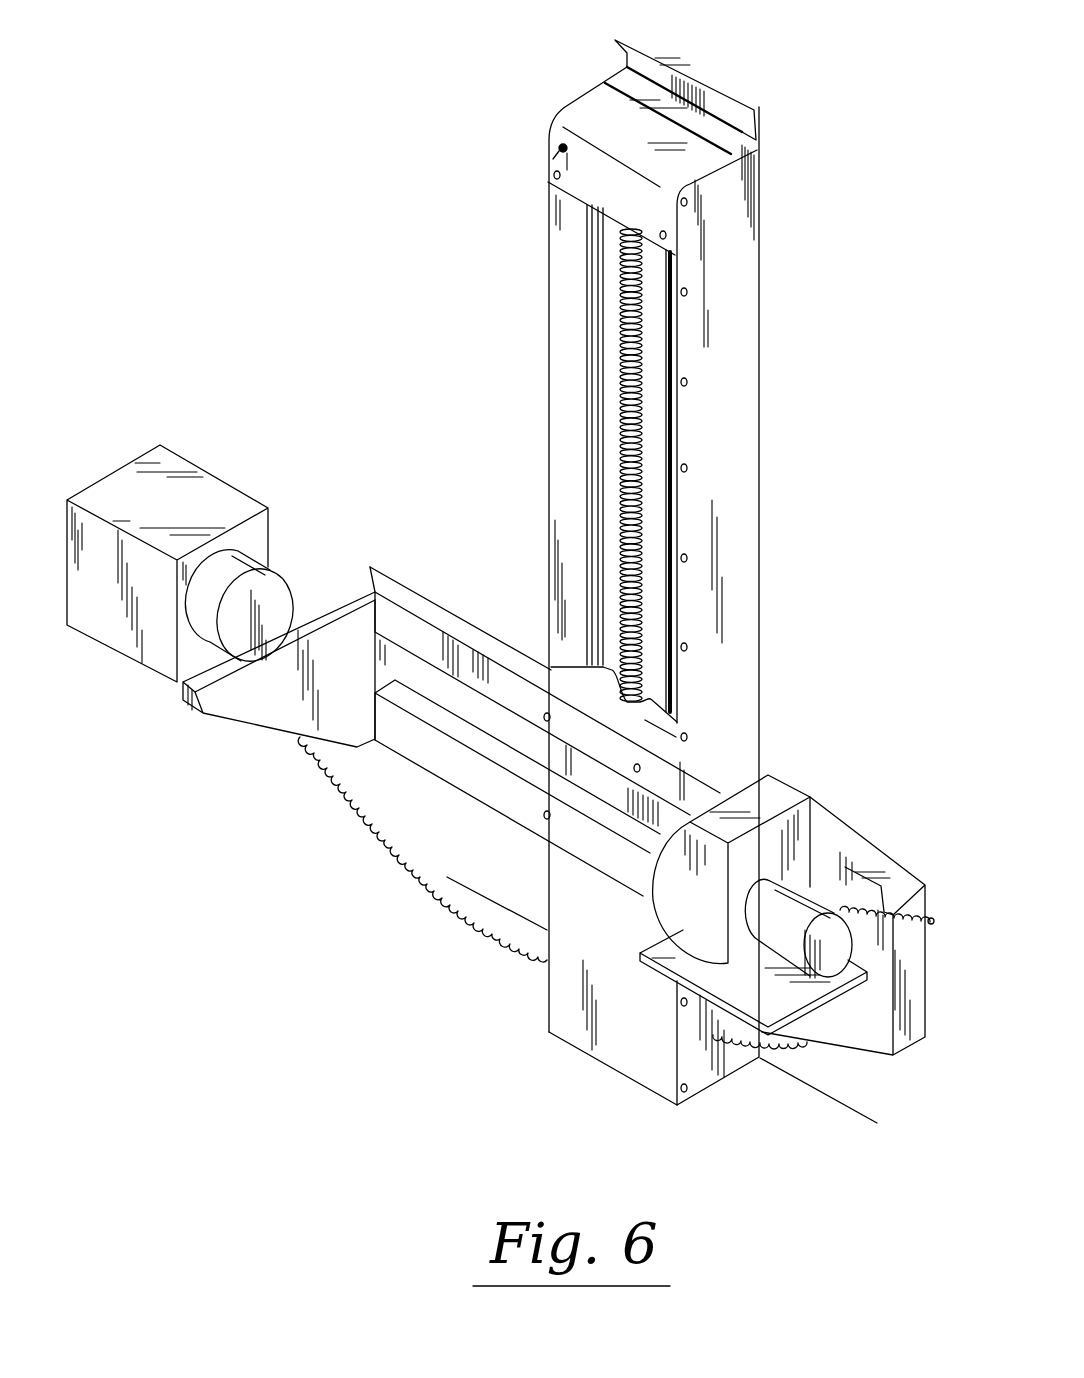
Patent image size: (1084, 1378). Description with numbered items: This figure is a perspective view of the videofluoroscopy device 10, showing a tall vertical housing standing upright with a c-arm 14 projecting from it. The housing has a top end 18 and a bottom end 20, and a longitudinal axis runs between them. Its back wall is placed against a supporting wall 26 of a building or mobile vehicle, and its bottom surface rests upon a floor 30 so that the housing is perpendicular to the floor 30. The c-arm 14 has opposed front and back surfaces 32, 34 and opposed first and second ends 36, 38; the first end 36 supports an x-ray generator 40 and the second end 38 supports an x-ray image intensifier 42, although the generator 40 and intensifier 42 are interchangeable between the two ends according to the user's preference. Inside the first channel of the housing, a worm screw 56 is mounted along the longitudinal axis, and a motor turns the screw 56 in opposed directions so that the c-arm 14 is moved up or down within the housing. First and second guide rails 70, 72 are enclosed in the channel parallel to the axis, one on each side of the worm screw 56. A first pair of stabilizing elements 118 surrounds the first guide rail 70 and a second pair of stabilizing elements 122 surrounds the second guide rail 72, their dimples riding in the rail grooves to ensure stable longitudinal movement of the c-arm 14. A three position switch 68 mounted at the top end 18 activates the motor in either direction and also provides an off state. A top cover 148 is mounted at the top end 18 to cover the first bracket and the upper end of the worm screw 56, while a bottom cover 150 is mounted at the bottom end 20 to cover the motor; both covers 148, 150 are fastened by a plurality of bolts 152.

The videofluoroscopy device 10 is at (206, 908).
The c-arm 14 is at (848, 926).
The top end 18 is at (652, 70).
The bottom end 20 is at (616, 893).
The supporting wall 26 is at (674, 567).
The floor 30 is at (786, 1121).
The front surface 32 is at (545, 684).
The back surface 34 is at (517, 758).
The first end 36 is at (279, 626).
The second end 38 is at (793, 1021).
The x-ray generator 40 is at (186, 561).
The x-ray image intensifier 42 is at (783, 849).
The worm screw 56 is at (553, 465).
The three position switch 68 is at (522, 137).
The first guide rail 70 is at (545, 435).
The second guide rail 72 is at (750, 481).
The first pair of stabilizing elements 118 is at (486, 590).
The second pair of stabilizing elements 122 is at (668, 702).
The top cover 148 is at (609, 161).
The bottom cover 150 is at (653, 586).
The bolts 152 is at (642, 653).